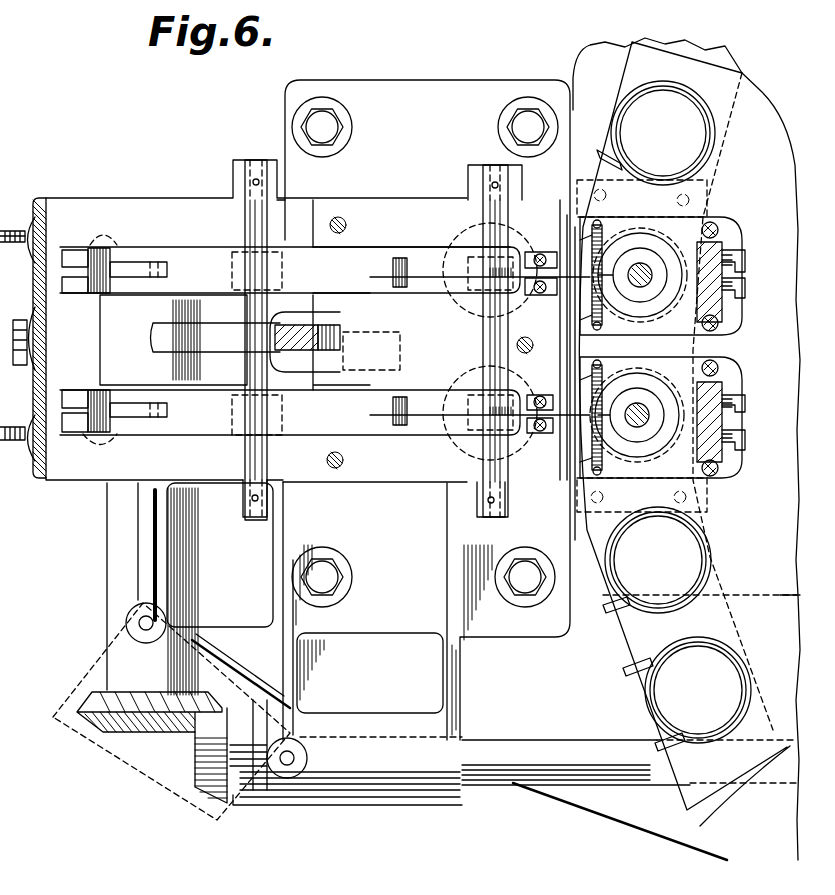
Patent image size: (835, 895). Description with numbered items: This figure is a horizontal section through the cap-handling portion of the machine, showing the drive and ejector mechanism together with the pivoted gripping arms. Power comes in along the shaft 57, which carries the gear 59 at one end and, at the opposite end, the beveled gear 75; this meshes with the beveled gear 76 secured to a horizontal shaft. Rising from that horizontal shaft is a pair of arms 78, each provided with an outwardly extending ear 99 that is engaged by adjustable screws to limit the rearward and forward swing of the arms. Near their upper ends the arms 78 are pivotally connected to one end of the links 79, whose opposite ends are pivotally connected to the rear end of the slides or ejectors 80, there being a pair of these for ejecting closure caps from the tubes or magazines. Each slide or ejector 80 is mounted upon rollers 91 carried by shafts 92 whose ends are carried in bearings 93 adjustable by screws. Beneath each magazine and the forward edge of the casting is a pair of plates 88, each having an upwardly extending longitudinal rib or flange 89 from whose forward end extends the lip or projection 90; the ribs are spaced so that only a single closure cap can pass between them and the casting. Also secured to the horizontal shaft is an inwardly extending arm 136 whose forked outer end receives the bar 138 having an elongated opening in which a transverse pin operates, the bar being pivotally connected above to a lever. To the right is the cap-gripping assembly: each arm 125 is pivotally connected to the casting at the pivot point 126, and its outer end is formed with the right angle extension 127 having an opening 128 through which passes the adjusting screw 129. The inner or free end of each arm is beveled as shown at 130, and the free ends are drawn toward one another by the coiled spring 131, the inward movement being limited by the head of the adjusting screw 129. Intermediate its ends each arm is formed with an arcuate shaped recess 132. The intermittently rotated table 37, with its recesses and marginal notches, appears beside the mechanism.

The rotatable table 37 is at (686, 449).
The shaft 57 is at (540, 763).
The gear 59 is at (613, 610).
The beveled gear 75 is at (207, 795).
The beveled gear 76 is at (160, 723).
The arms 78 is at (68, 240).
The links 79 is at (130, 268).
The slide or ejector 80 is at (210, 258).
The plates 88 is at (547, 392).
The rib or flange 89 is at (538, 256).
The lip or projection 90 is at (600, 254).
The rollers 91 is at (278, 283).
The shafts 92 is at (272, 213).
The bearings 93 is at (256, 165).
The ear 99 is at (104, 252).
The arm 125 is at (667, 217).
The pivot point 126 is at (716, 225).
The right angle extension 127 is at (724, 366).
The opening 128 is at (735, 252).
The adjusting screw 129 is at (742, 289).
The beveled end 130 is at (573, 227).
The coiled spring 131 is at (573, 233).
The arcuate shaped recess 132 is at (643, 211).
The arm 136 is at (221, 340).
The bar 138 is at (318, 328).